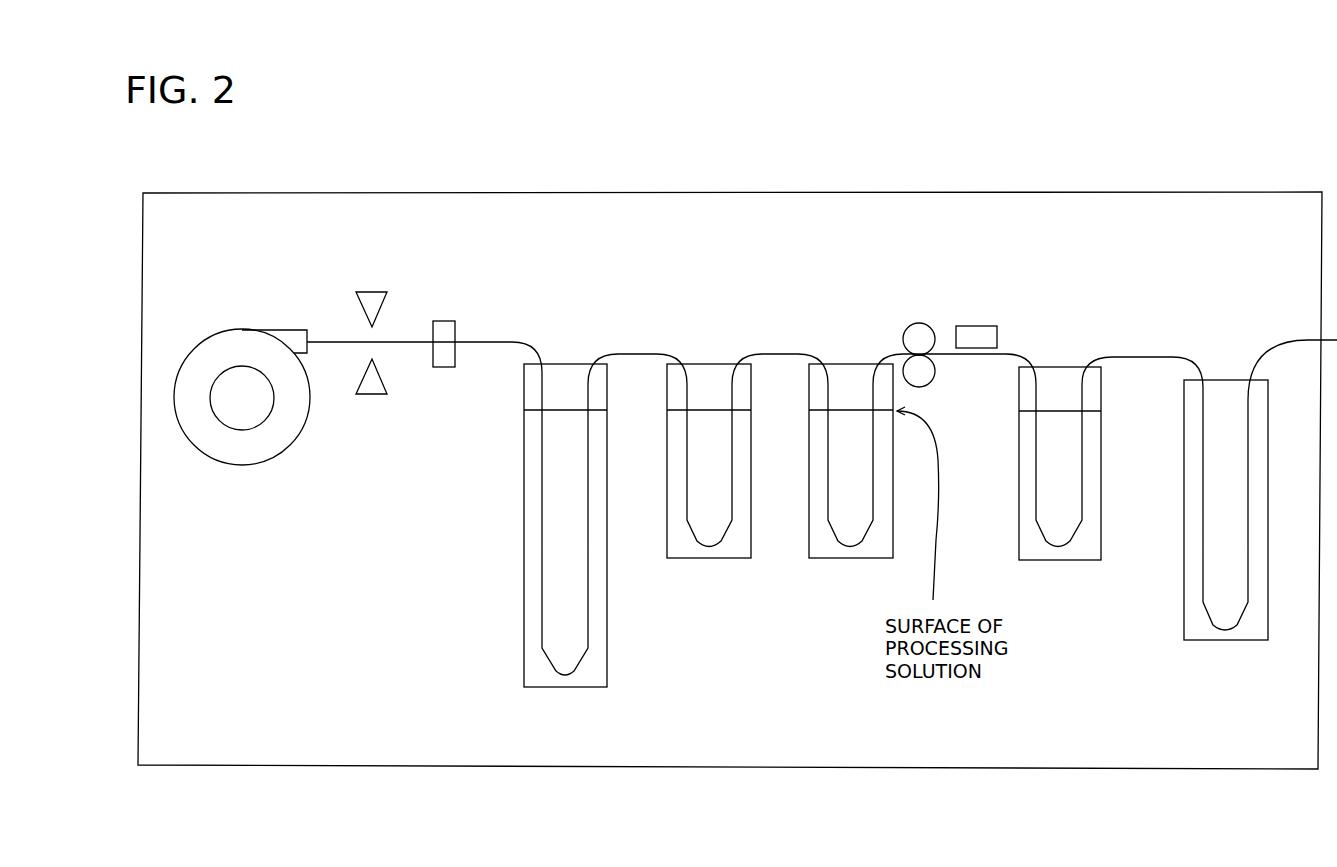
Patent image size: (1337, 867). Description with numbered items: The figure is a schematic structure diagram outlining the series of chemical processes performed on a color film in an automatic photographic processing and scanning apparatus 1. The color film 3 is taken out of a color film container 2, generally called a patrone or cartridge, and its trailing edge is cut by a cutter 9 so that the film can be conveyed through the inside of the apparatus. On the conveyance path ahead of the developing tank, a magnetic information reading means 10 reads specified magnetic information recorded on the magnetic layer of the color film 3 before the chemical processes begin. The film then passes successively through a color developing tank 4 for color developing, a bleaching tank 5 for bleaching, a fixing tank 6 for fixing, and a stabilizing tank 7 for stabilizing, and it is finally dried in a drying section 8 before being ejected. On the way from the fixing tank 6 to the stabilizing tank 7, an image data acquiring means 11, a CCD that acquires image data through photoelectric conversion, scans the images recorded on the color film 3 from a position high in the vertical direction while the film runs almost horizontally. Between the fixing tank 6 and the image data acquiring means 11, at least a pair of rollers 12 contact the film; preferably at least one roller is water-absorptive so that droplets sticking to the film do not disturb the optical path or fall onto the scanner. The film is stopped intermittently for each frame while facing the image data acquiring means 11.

The automatic photographic processing and scanning apparatus 1 is at (672, 190).
The color film container 2 is at (241, 467).
The color film 3 is at (485, 340).
The color developing tank 4 is at (565, 689).
The bleaching tank 5 is at (708, 560).
The fixing tank 6 is at (850, 560).
The stabilizing tank 7 is at (1057, 562).
The drying section 8 is at (1220, 642).
The cutter 9 is at (372, 396).
The magnetic information reading means 10 is at (444, 369).
The image data acquiring means 11 is at (977, 325).
The pair of rollers 12 is at (922, 322).